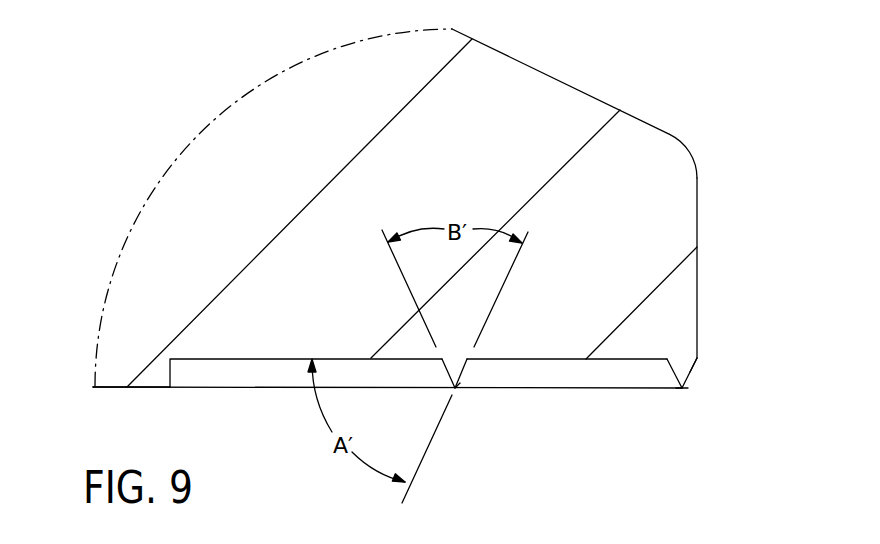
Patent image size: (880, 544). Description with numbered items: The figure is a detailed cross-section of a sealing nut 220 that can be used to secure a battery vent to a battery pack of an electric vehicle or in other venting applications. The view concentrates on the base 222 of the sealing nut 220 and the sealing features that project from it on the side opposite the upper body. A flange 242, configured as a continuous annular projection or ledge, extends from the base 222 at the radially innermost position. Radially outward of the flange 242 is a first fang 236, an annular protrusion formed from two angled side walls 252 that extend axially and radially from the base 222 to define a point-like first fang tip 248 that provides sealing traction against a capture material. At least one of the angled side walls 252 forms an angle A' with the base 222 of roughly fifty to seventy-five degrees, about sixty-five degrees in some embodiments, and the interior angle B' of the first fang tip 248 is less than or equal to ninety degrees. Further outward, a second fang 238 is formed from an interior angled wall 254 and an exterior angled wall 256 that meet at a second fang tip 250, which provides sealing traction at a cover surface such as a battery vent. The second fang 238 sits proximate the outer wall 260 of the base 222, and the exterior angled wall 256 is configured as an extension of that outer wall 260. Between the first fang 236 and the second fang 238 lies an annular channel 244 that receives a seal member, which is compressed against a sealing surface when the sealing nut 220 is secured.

The sealing nut 220 is at (213, 65).
The base 222 is at (697, 179).
The first fang 236 is at (458, 383).
The second fang 238 is at (692, 368).
The flange 242 is at (138, 389).
The channel 244 is at (570, 371).
The first fang tip 248 is at (457, 389).
The second fang tip 250 is at (682, 388).
The angled side walls 252 is at (447, 373).
The interior angled wall 254 is at (677, 362).
The exterior angled wall 256 is at (690, 377).
The outer wall 260 is at (697, 266).